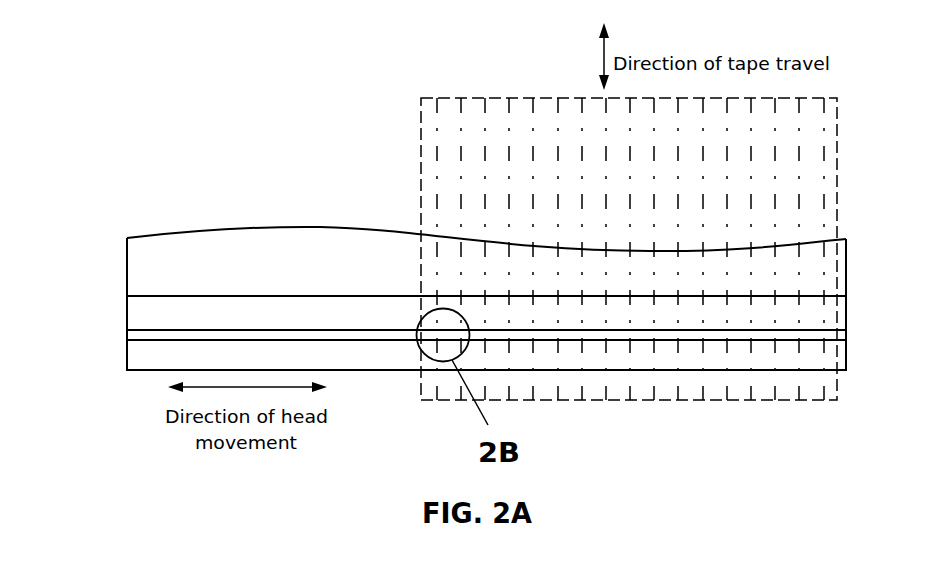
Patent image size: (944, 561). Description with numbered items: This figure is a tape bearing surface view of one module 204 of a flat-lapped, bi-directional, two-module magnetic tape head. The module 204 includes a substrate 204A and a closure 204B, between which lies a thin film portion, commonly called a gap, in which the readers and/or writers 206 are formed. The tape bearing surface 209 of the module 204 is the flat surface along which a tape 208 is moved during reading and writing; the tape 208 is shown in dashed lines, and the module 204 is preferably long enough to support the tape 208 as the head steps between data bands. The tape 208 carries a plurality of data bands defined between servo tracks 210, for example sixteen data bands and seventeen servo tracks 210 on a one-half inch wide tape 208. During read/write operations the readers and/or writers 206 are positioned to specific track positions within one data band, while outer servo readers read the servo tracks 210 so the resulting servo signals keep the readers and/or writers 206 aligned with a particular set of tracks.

The module 204 is at (168, 210).
The substrate 204A is at (263, 227).
The closure 204B is at (127, 357).
The readers and/or writers 206 is at (412, 332).
The tape 208 is at (421, 101).
The tape bearing surface 209 is at (323, 318).
The servo tracks 210 is at (530, 185).